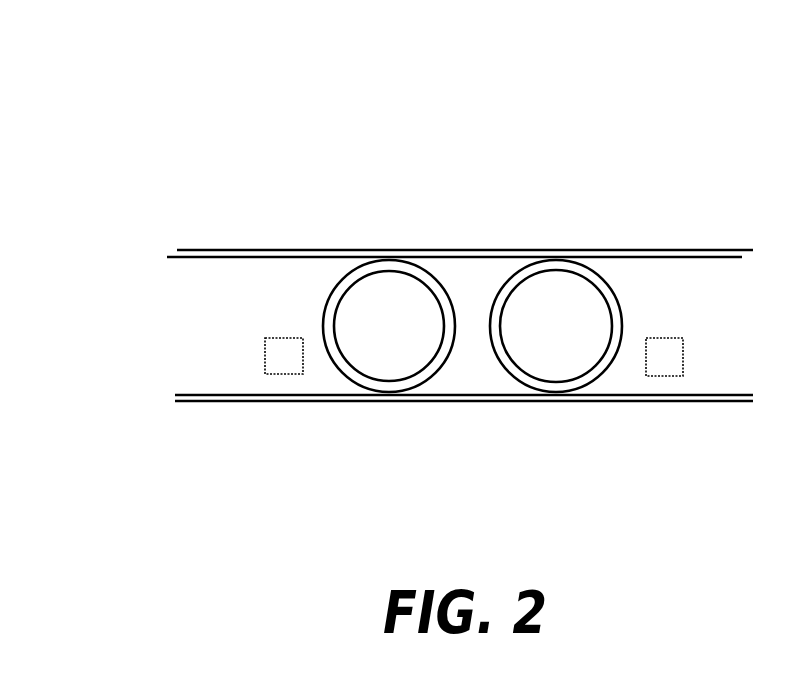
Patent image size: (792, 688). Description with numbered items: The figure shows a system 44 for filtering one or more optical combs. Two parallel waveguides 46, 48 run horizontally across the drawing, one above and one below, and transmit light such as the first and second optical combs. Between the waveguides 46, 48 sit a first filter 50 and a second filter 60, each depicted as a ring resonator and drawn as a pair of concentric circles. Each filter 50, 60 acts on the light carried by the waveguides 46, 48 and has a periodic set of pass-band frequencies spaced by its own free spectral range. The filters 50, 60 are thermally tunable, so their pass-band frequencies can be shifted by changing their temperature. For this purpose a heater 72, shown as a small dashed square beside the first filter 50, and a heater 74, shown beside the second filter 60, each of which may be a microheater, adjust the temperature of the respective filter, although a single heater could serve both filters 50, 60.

The system 44 is at (97, 142).
The waveguide 46 is at (264, 250).
The waveguide 48 is at (272, 402).
The first filter 50 is at (442, 360).
The second filter 60 is at (614, 352).
The heater 72 is at (303, 365).
The heater 74 is at (683, 365).